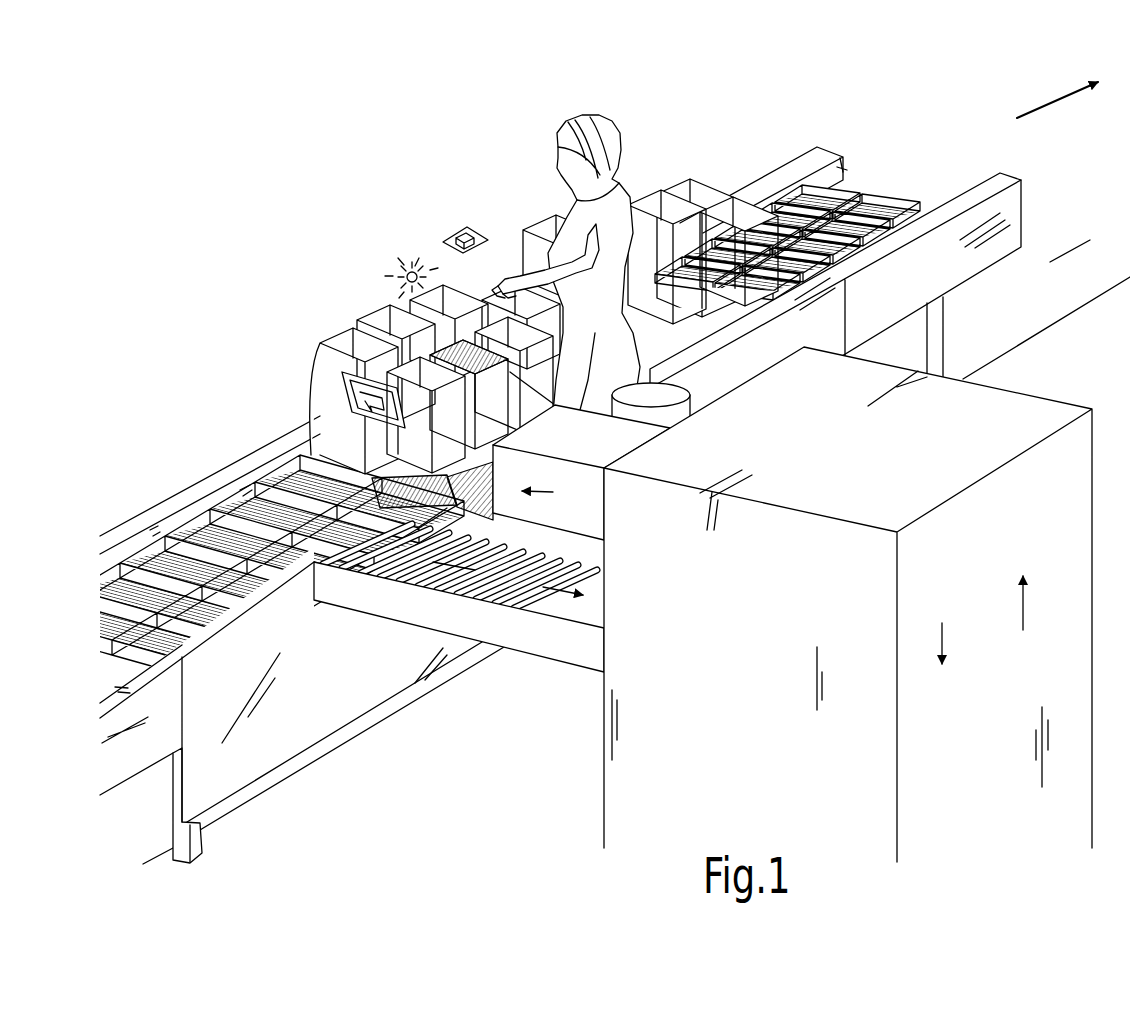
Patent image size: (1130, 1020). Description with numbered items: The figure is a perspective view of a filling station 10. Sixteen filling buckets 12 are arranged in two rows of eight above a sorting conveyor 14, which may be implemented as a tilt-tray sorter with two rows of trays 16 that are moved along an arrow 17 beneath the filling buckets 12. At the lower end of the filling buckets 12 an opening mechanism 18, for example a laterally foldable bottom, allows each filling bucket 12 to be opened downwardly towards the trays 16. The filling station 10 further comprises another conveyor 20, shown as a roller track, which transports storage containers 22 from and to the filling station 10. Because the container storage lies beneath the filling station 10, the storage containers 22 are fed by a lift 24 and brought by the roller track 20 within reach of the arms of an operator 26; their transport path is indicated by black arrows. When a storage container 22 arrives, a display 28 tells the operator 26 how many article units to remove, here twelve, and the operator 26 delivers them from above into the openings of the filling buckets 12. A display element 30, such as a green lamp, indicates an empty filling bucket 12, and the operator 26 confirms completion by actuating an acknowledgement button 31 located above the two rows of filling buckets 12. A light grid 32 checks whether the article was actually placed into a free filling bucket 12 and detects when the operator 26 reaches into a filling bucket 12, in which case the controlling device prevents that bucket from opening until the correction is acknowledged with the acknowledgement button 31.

The filling station 10 is at (378, 157).
The filling bucket 12 is at (650, 184).
The sorting conveyor 14 is at (927, 133).
The trays 16 is at (853, 190).
The arrow 17 is at (1042, 108).
The opening mechanism 18 is at (410, 488).
The conveyor 20 is at (393, 600).
The storage container 22 is at (585, 470).
The lift 24 is at (1012, 423).
The operator 26 is at (578, 113).
The display 28 is at (335, 389).
The display element 30 is at (413, 250).
The acknowledgement button 31 is at (473, 227).
The light grid 32 is at (478, 372).